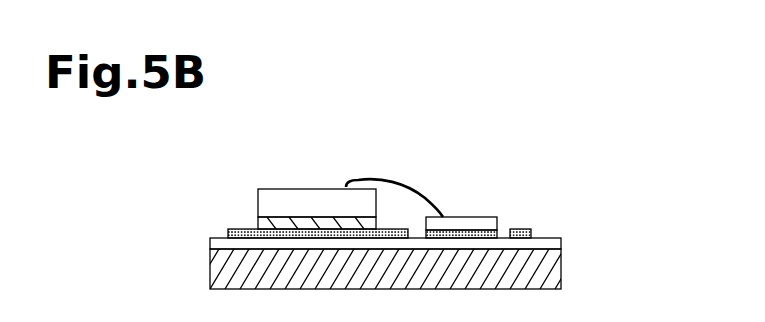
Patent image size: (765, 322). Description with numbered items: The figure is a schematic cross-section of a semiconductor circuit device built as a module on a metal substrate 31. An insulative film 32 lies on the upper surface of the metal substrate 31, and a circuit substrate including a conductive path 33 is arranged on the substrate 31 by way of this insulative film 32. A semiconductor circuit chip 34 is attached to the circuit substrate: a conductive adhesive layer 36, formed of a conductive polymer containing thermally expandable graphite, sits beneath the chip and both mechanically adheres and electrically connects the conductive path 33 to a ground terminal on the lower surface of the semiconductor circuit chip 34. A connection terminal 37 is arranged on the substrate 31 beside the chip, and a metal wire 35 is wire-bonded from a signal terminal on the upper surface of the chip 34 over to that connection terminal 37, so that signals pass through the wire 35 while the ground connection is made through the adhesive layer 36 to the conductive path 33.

The metal substrate 31 is at (553, 275).
The insulative film 32 is at (547, 242).
The conductive path 33 is at (522, 228).
The semiconductor circuit chip 34 is at (270, 193).
The metal wire 35 is at (398, 178).
The conductive adhesive layer 36 is at (262, 221).
The connection terminal 37 is at (458, 219).